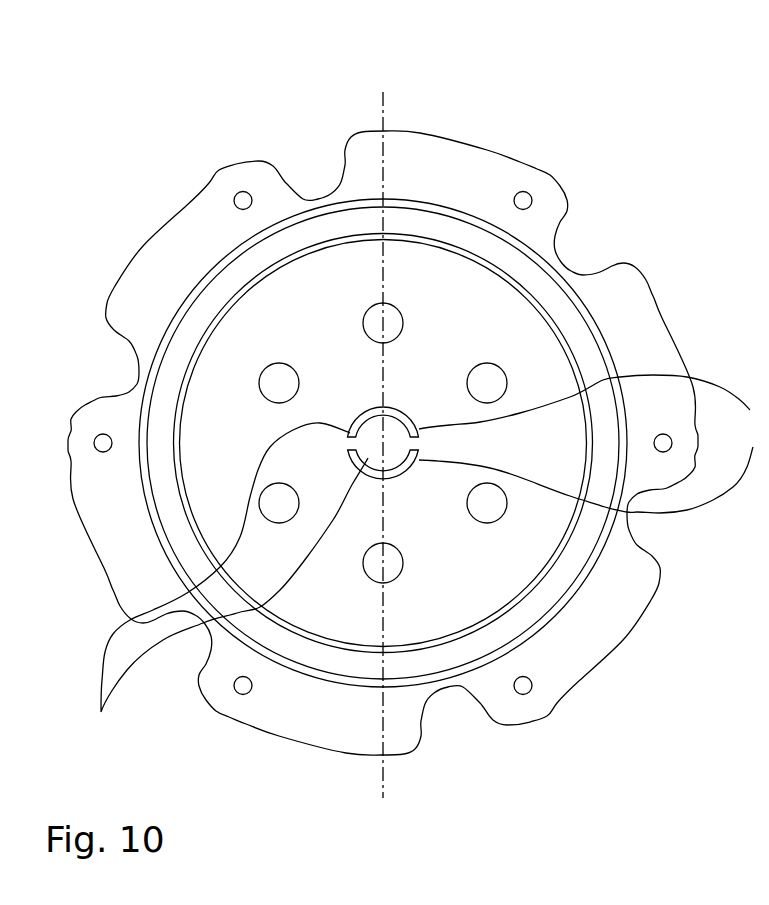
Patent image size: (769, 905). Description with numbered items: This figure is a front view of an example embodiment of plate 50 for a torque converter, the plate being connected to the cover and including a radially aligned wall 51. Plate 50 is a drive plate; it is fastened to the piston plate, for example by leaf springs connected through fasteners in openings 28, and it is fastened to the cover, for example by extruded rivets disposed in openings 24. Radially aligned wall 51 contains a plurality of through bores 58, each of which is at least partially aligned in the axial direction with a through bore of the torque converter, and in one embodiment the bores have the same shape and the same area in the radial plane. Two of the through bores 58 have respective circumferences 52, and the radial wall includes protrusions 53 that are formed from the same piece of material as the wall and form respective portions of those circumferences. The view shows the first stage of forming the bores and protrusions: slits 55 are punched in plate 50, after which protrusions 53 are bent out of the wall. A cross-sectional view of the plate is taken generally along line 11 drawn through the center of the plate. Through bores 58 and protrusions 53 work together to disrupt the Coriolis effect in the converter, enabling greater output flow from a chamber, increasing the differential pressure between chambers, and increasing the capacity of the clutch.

The plate 50 is at (134, 125).
The openings 28 is at (240, 192).
The openings 24 is at (277, 377).
The slits 55 is at (364, 407).
The line 11- 11 is at (383, 92).
The radially aligned wall 51 is at (437, 347).
The through bores 58 is at (432, 410).
The circumferences 52 is at (594, 444).
The protrusions 53 is at (227, 584).